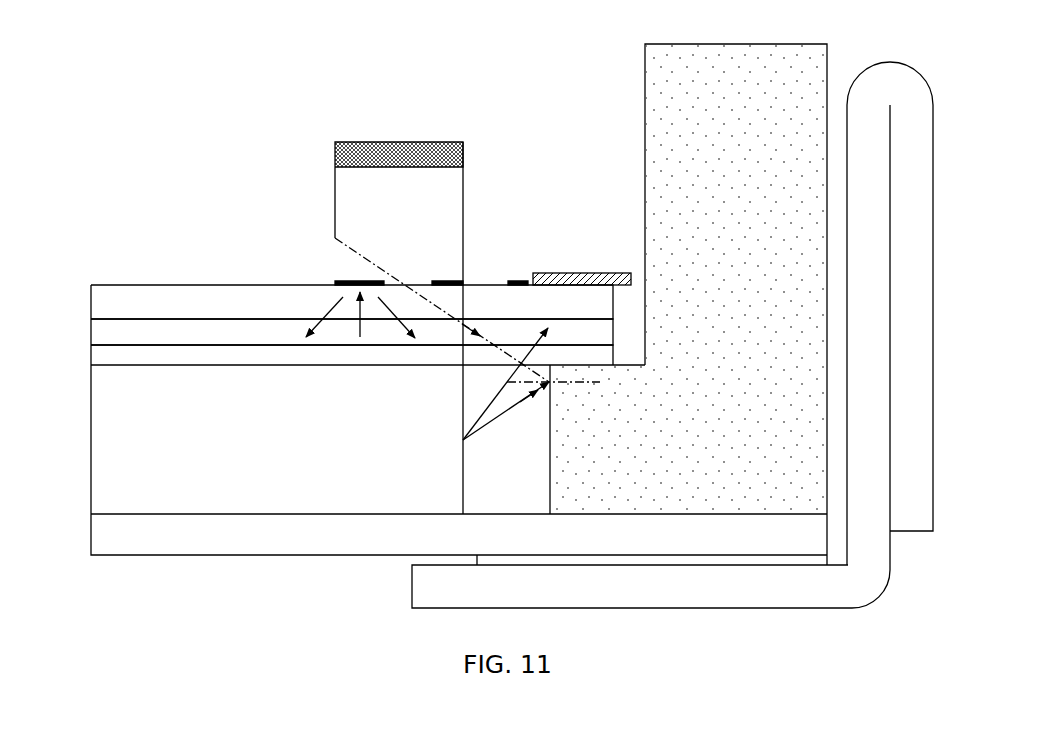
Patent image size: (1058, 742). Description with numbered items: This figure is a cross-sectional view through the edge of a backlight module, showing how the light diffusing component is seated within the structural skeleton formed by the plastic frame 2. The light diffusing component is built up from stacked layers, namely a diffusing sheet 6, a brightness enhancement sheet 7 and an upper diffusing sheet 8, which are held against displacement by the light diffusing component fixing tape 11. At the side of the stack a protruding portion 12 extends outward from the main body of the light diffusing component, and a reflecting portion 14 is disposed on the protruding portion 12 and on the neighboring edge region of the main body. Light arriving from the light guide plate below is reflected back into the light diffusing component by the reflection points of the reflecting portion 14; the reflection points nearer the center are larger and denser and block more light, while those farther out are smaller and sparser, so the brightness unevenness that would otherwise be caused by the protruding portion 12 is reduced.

The plastic frame 2 is at (703, 130).
The diffusing sheet 6 is at (100, 357).
The brightness enhancement sheet 7 is at (100, 333).
The upper diffusing sheet 8 is at (105, 303).
The light diffusing component fixing tape 11 is at (592, 273).
The protruding portion 12 is at (490, 305).
The reflecting portion 14 is at (351, 282).